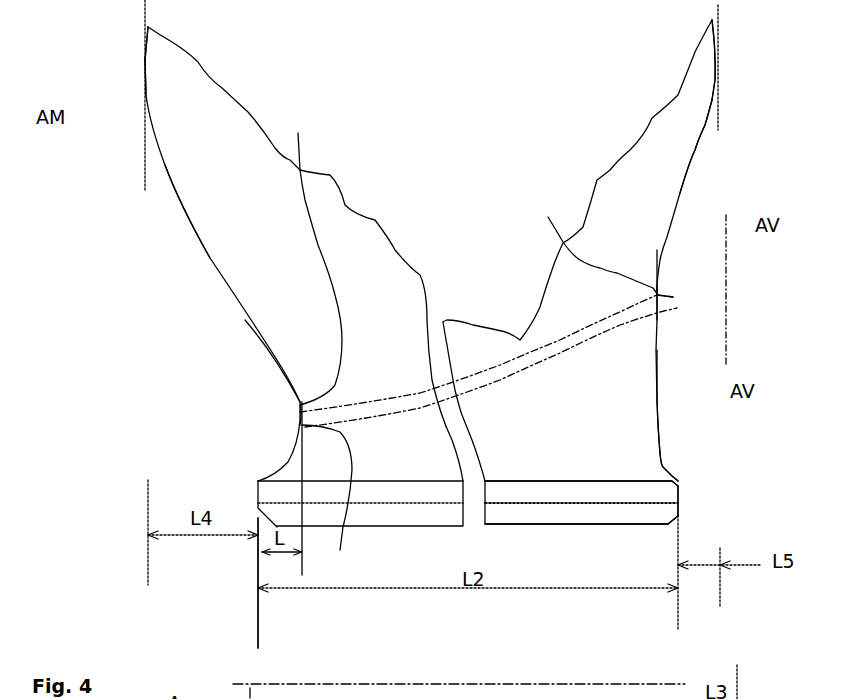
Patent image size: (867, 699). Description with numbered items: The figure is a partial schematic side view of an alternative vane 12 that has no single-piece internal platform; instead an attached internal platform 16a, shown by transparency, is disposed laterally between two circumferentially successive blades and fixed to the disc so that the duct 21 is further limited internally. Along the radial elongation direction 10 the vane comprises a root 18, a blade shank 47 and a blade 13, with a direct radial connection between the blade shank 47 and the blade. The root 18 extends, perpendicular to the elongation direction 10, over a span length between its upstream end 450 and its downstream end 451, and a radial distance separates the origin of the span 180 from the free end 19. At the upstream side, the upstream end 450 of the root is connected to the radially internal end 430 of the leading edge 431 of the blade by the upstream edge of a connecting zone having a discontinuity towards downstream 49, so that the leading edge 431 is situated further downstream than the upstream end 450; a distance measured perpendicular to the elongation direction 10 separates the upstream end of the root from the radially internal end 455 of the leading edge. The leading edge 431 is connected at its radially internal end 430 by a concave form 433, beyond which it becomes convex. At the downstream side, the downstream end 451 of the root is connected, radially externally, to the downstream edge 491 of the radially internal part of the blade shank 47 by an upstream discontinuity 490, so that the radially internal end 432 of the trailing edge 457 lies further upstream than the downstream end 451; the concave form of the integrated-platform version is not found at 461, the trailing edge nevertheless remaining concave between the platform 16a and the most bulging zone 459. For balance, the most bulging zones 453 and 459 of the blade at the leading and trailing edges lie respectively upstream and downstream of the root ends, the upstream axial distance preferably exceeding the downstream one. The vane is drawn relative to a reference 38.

The blade 13 is at (232, 135).
The radially internal end of the leading edge 430 is at (311, 256).
The most bulging zone of the blade at the leading edge 453 is at (145, 60).
The leading edge 431 is at (210, 258).
The concave form 433 is at (258, 338).
The duct 21 is at (245, 410).
The discontinuity towards downstream 49 is at (296, 455).
The upstream end of the root 450 is at (257, 500).
The radially internal end of the leading edge of the blade 455 is at (333, 493).
The reference plane 38 is at (258, 630).
The blade shank 47 is at (468, 466).
The root 18 is at (620, 490).
The origin of the span 180 is at (520, 490).
The free end 19 is at (568, 524).
The downstream end of the root 451 is at (678, 497).
The elongation direction 10 is at (725, 212).
The most bulging zone of the blade at the trailing edge 459 is at (718, 78).
The trailing edge 457 is at (698, 162).
The radially internal end of the trailing edge 432 is at (585, 241).
The internal platform 16a is at (490, 375).
The vane 12 is at (677, 353).
The concave form 461 is at (745, 290).
The downstream edge of the radially internal part of the blade shank 491 is at (660, 400).
The upstream discontinuity 490 is at (668, 468).